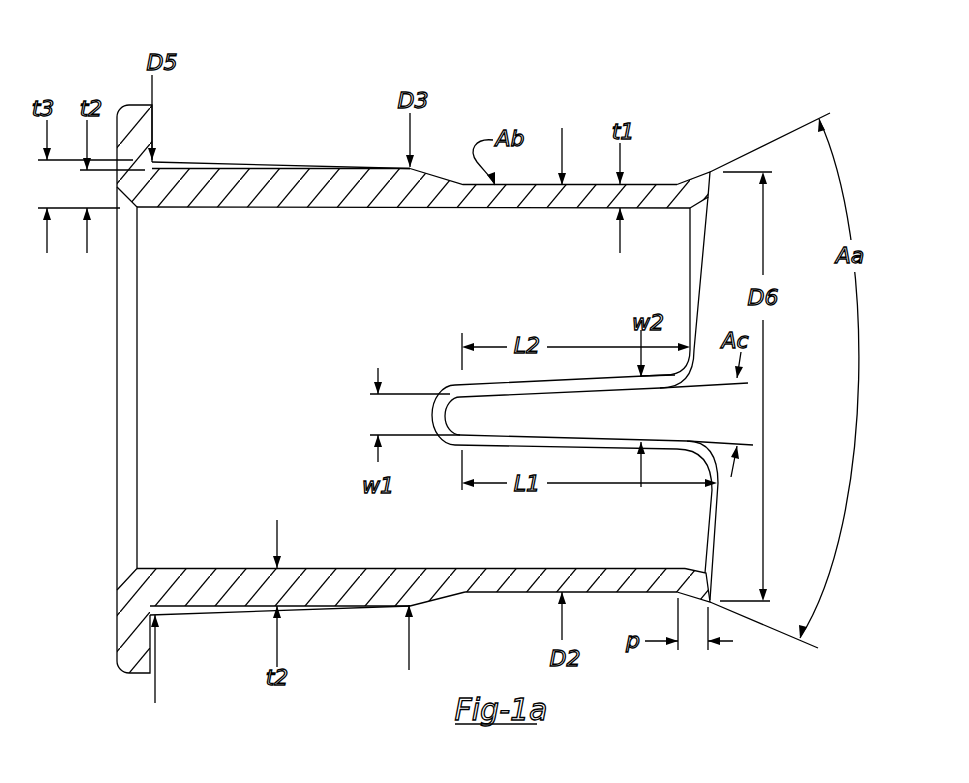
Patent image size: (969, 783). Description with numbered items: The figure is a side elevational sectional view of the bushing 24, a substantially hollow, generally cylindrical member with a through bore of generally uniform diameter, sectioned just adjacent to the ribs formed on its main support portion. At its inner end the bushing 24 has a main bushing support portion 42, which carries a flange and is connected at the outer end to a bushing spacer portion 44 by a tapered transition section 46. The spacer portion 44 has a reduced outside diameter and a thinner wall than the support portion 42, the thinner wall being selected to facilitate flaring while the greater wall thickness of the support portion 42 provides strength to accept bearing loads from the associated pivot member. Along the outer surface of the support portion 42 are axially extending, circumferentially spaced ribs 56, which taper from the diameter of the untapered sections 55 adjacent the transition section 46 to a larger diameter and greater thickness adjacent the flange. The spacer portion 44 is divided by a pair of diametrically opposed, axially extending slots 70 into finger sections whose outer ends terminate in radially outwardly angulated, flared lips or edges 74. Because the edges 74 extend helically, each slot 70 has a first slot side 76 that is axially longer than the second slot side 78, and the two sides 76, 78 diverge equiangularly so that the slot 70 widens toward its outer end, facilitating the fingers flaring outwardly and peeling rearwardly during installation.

The bushing 24 is at (425, 160).
The main bushing support portion 42 is at (415, 213).
The bushing spacer portion 44 is at (472, 566).
The tapered transition section 46 is at (442, 596).
The untapered sections 55 is at (224, 186).
The ribs 56 is at (176, 161).
The slots 70 is at (575, 405).
The flared lips or edges 74 is at (699, 201).
The first slot side 76 is at (568, 437).
The second slot side 78 is at (603, 397).